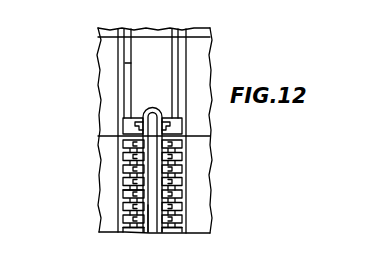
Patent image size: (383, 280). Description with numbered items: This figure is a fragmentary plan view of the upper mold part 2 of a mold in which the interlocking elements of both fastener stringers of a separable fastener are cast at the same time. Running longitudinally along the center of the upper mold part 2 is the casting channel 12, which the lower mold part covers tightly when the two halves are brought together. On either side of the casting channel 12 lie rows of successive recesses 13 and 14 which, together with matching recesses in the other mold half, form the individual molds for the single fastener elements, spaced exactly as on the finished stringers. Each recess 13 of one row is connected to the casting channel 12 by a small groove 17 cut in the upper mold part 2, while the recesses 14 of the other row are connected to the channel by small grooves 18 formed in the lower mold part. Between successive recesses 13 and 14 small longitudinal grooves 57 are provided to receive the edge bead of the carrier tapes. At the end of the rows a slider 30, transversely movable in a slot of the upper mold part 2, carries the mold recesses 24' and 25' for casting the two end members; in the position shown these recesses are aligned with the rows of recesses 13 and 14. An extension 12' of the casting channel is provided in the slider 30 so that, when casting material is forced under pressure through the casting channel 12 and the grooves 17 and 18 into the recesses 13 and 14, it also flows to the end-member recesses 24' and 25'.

The upper mold part 2 is at (208, 216).
The casting channel 12 is at (100, 203).
The extension of the casting channel 12' is at (150, 154).
The recesses 13 is at (172, 223).
The recesses 14 is at (130, 223).
The groove 17 is at (155, 205).
The grooves 18 is at (128, 180).
The mold recess for end member 24' is at (201, 129).
The mold recess for end member 25' is at (98, 123).
The slider 30 is at (104, 94).
The longitudinal grooves 57 is at (125, 153).